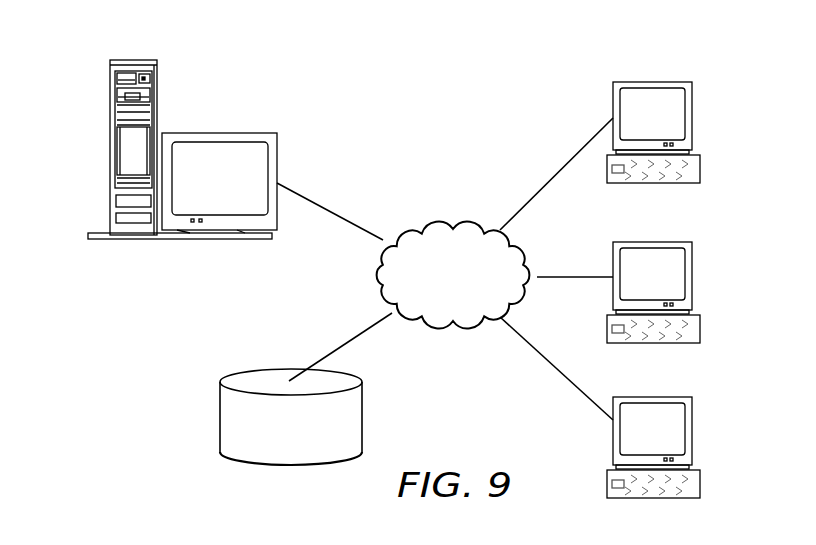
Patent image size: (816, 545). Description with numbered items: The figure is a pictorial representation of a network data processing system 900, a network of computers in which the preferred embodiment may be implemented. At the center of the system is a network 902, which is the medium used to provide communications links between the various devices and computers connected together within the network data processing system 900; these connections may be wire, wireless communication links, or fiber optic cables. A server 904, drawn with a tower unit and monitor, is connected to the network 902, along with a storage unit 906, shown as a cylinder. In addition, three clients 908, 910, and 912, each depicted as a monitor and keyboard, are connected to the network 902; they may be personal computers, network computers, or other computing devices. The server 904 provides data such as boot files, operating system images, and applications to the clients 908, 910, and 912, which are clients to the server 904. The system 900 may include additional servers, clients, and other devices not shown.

The network data processing system 900 is at (513, 91).
The network 902 is at (422, 218).
The server 904 is at (110, 148).
The storage unit 906 is at (272, 464).
The client 908 is at (692, 115).
The client 910 is at (692, 270).
The client 912 is at (692, 433).